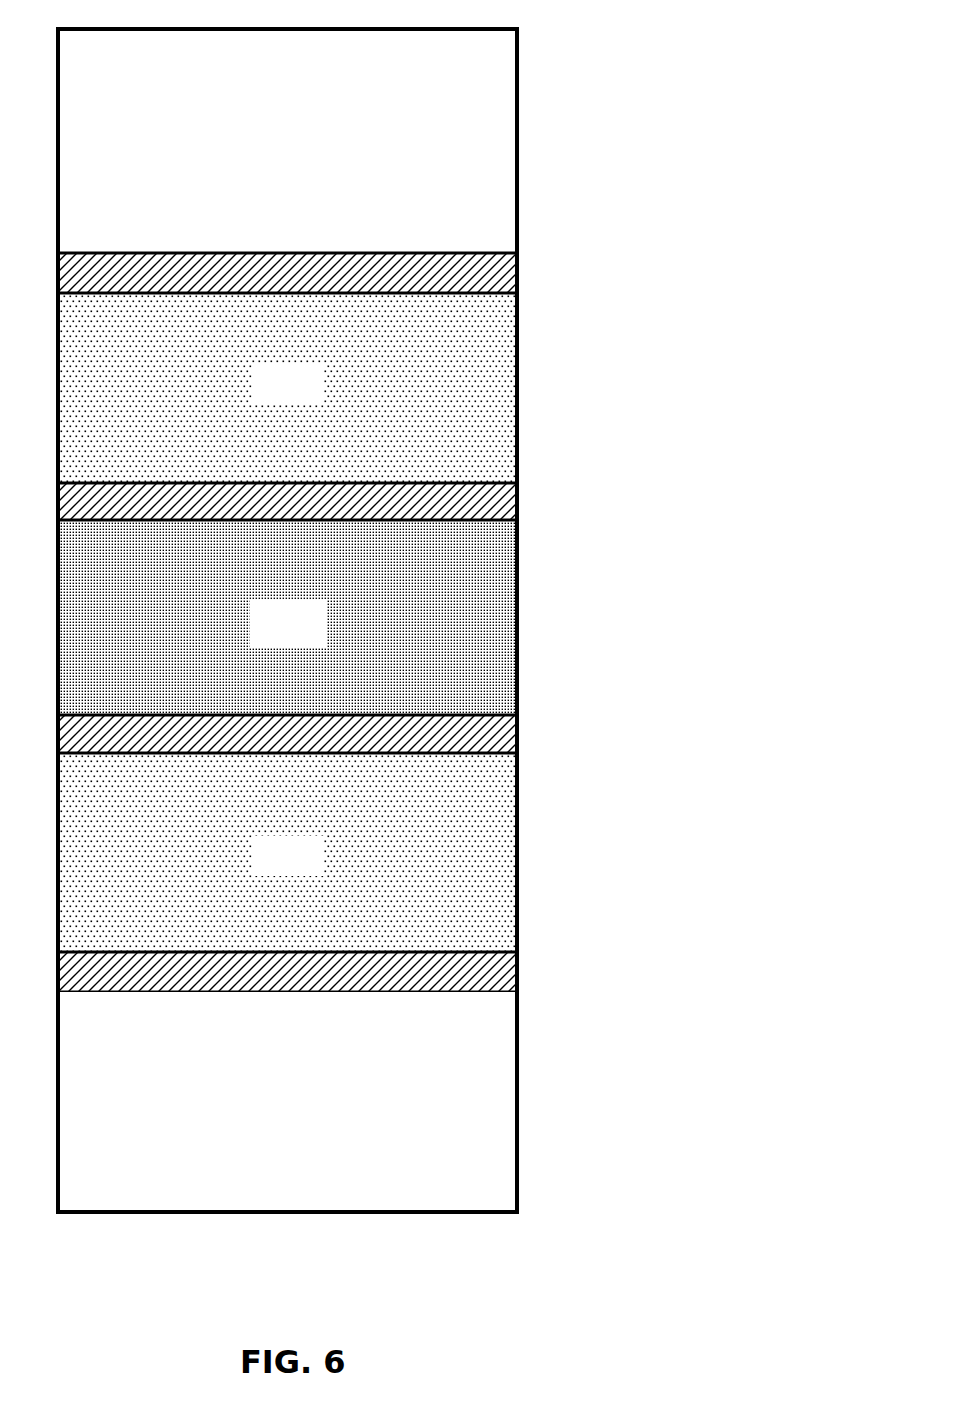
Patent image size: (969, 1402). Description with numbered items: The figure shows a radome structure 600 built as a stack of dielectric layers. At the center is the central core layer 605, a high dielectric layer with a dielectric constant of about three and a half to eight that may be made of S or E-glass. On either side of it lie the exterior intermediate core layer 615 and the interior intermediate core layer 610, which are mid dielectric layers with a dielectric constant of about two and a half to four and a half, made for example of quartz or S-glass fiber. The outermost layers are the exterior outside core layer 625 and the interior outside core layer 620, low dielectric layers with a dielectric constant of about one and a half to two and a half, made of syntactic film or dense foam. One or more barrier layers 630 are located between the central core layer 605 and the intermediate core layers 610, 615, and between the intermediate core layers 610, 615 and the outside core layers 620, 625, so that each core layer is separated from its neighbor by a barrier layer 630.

The radome structure 600 is at (583, 1310).
The central core layer 605 is at (518, 608).
The interior intermediate core layer 610 is at (518, 837).
The exterior intermediate core layer 615 is at (518, 350).
The interior outside core layer 620 is at (518, 1060).
The exterior outside core layer 625 is at (518, 115).
The barrier layers 630 is at (518, 268).